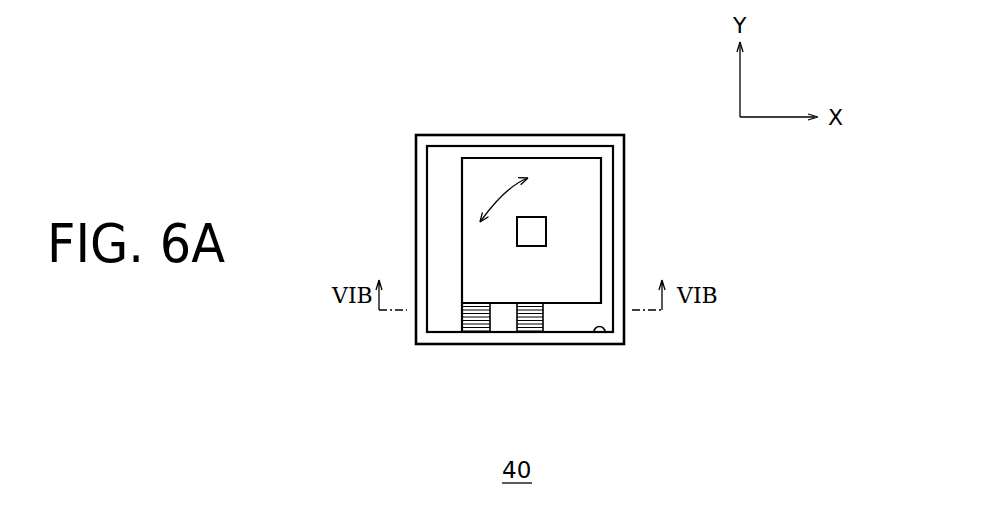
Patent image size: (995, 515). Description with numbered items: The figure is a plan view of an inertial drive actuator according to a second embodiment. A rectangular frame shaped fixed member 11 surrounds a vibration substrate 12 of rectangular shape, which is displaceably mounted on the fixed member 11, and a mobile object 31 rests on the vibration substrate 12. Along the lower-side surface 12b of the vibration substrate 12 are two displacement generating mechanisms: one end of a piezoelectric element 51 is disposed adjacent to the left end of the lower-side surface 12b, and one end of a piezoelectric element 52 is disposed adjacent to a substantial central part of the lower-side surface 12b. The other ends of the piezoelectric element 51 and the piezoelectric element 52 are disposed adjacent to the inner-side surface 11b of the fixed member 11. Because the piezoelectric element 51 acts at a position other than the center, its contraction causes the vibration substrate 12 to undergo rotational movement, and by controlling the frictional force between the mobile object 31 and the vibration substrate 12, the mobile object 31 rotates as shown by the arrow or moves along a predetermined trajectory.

The fixed member 11 is at (423, 163).
The inner-side surface 11b is at (603, 333).
The vibration substrate 12 is at (480, 268).
The lower-side surface 12b is at (572, 304).
The mobile object 31 is at (546, 225).
The piezoelectric element 51 is at (472, 322).
The piezoelectric element 52 is at (528, 322).